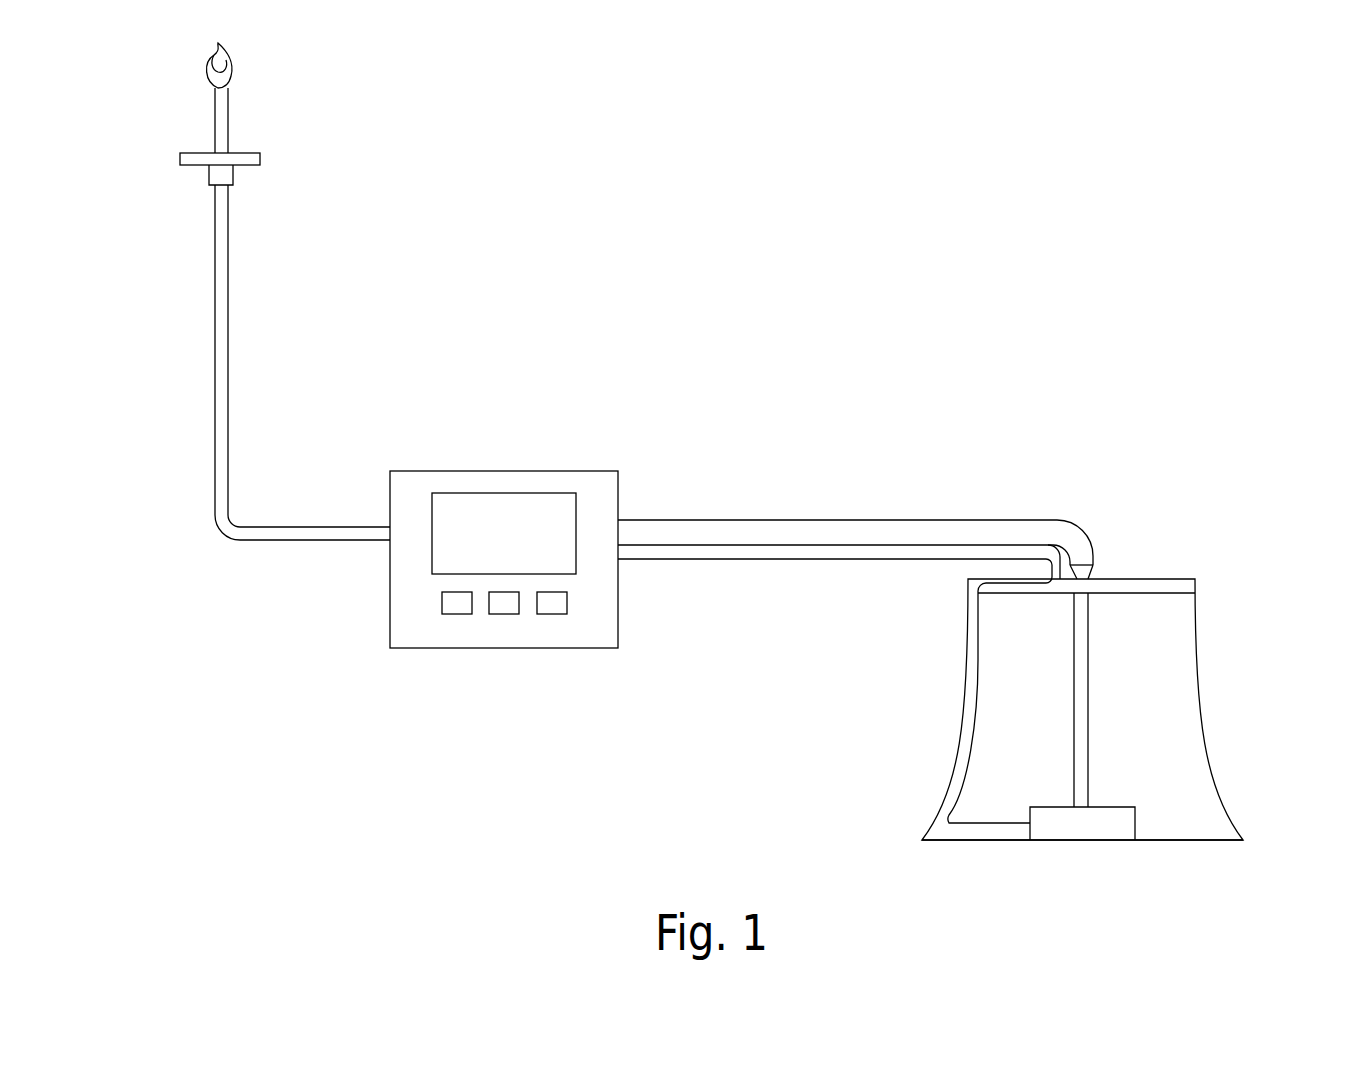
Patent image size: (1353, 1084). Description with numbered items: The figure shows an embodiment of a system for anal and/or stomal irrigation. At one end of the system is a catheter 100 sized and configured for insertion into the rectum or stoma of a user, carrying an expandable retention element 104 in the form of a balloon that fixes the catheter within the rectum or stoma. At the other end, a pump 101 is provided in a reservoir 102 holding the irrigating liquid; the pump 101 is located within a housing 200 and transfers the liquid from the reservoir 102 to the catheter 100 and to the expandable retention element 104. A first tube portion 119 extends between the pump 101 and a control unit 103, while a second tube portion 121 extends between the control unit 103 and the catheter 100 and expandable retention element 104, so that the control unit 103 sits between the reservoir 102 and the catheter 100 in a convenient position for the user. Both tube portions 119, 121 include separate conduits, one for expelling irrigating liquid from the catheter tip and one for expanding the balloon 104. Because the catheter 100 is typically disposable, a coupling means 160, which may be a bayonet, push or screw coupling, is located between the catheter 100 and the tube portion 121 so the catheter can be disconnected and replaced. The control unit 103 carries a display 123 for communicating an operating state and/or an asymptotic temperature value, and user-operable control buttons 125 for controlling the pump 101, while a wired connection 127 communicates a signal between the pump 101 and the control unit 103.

The catheter 100 is at (197, 97).
The pump 101 is at (1113, 832).
The reservoir 102 is at (1185, 684).
The control unit 103 is at (591, 478).
The expandable retention element 104 is at (230, 77).
The first tube portion 119 is at (820, 530).
The second tube portion 121 is at (222, 350).
The display 123 is at (528, 548).
The control buttons 125 is at (551, 603).
The wired connection 127 is at (863, 555).
The coupling means 160 is at (260, 157).
The housing 200 is at (1057, 805).